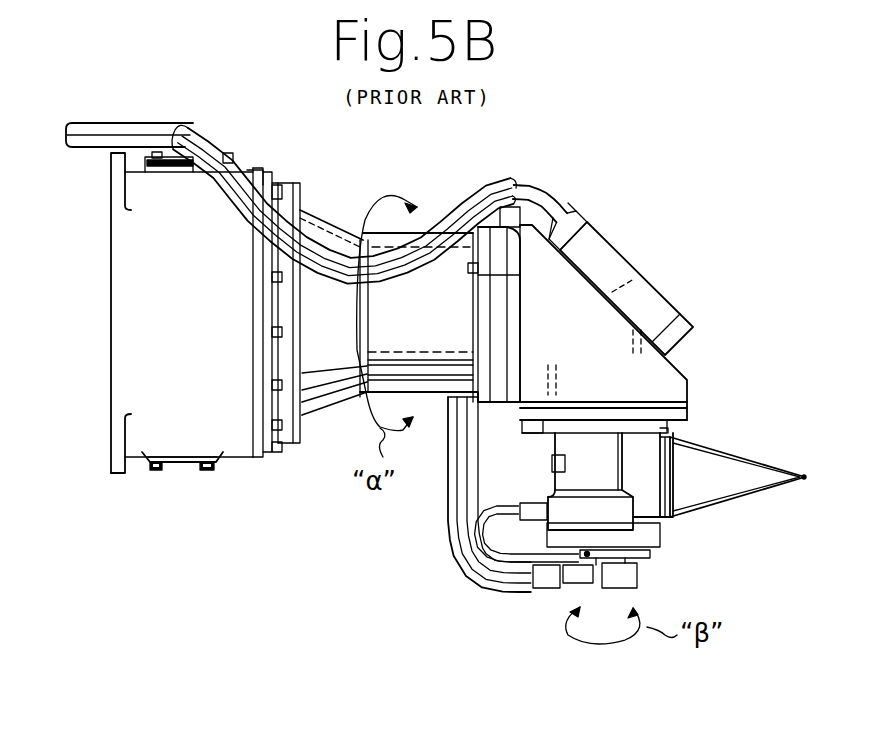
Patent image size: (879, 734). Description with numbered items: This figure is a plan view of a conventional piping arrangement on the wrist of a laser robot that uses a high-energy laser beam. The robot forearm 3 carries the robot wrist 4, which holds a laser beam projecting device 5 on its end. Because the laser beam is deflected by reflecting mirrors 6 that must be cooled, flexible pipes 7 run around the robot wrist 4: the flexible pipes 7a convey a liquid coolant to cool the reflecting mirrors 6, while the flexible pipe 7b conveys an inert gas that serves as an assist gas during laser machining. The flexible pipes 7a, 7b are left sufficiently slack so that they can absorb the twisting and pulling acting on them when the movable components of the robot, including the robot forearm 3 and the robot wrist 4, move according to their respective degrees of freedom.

The robot forearm 3 is at (192, 428).
The robot wrist 4 is at (363, 240).
The laser beam projecting device 5 is at (730, 460).
The reflecting mirror 6 is at (622, 263).
The flexible pipe 7 is at (473, 203).
The flexible pipe for liquid coolant 7a is at (544, 195).
The flexible pipe for inert gas 7b is at (492, 580).